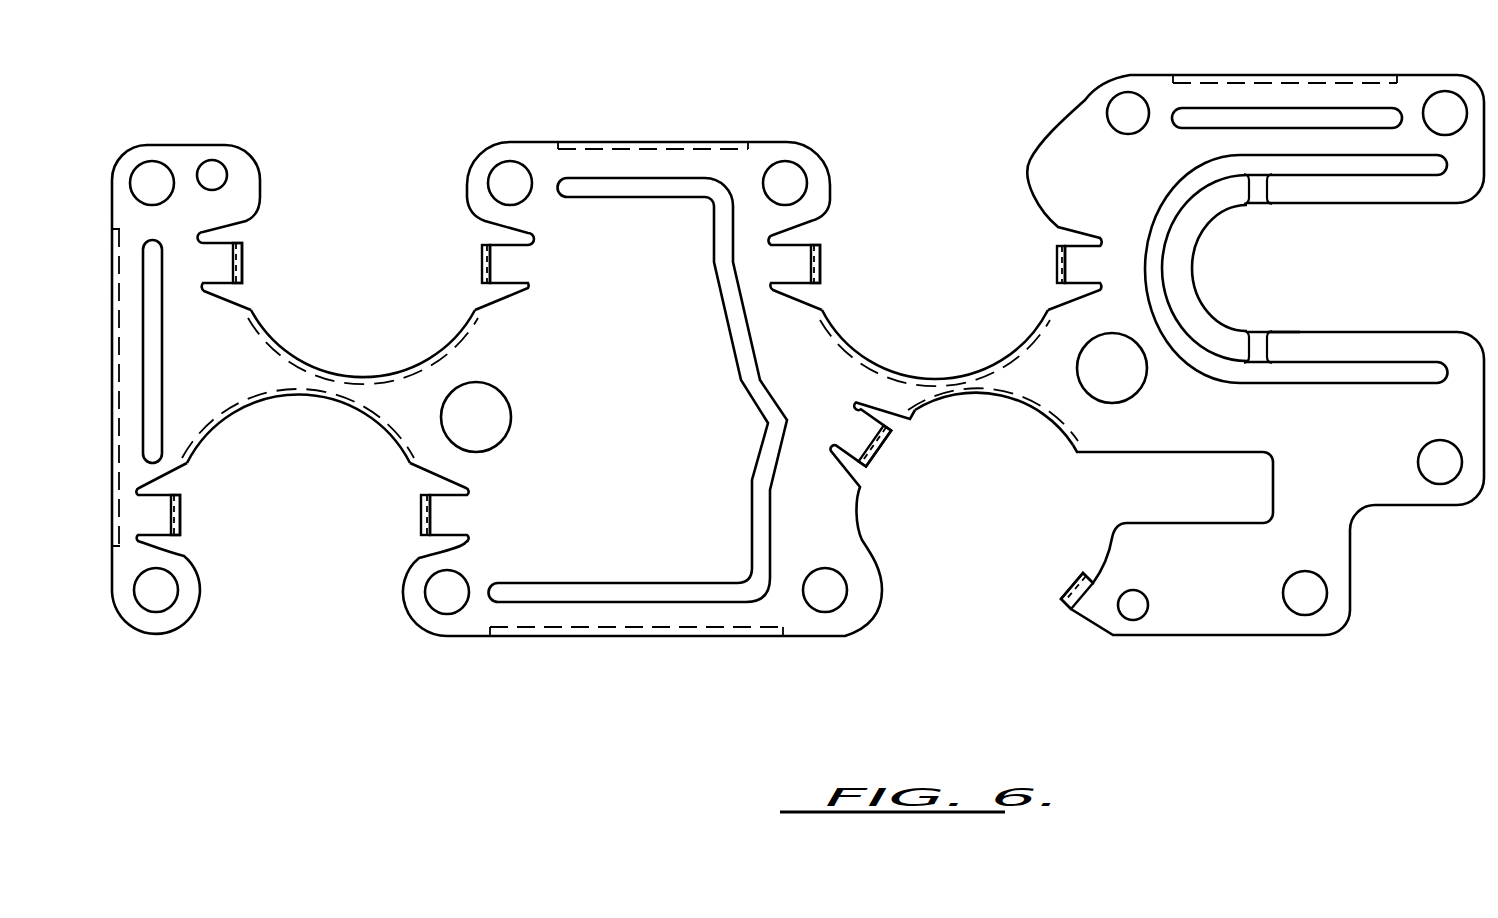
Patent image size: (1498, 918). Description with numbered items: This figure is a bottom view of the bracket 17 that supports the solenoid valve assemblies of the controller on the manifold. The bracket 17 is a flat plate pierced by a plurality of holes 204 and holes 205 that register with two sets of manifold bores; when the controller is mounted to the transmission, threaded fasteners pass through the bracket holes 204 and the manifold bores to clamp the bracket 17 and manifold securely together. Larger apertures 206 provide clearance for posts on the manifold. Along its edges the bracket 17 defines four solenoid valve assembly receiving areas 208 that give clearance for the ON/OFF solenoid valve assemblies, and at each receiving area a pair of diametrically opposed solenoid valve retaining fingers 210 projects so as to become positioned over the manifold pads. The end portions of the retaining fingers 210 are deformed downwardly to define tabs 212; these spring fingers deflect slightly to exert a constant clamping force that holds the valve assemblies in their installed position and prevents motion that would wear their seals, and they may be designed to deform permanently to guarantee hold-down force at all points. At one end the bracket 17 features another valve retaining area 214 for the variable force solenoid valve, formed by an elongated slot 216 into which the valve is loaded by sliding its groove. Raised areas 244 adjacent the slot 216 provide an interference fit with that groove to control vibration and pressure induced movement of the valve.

The bracket 17 is at (644, 136).
The holes 204 is at (158, 168).
The holes 205 is at (214, 163).
The apertures 206 is at (500, 395).
The solenoid valve assembly receiving areas 208 is at (402, 300).
The solenoid valve retaining fingers 210 is at (246, 252).
The tabs 212 is at (238, 283).
The valve retaining area 214 is at (1392, 265).
The elongated slot 216 is at (1355, 336).
The raised areas 244 is at (1257, 190).